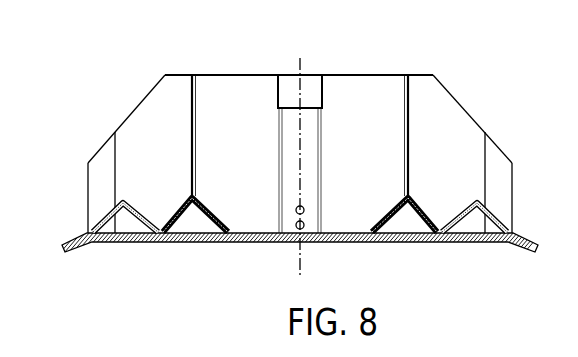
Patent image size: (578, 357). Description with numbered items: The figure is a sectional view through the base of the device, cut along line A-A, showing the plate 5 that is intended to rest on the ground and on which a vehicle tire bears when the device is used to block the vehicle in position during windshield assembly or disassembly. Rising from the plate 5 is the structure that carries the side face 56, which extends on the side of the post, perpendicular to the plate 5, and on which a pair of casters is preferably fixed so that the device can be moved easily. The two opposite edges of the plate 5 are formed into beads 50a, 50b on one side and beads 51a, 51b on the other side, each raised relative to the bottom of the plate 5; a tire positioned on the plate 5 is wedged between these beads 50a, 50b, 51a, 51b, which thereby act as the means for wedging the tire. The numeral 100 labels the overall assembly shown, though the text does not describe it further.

The plate 5 is at (272, 241).
The side face 56 is at (347, 214).
The bead 50a is at (107, 217).
The bead 50b is at (178, 205).
The bead 51a is at (410, 193).
The bead 51b is at (480, 204).
The housing assembly 100 is at (97, 356).